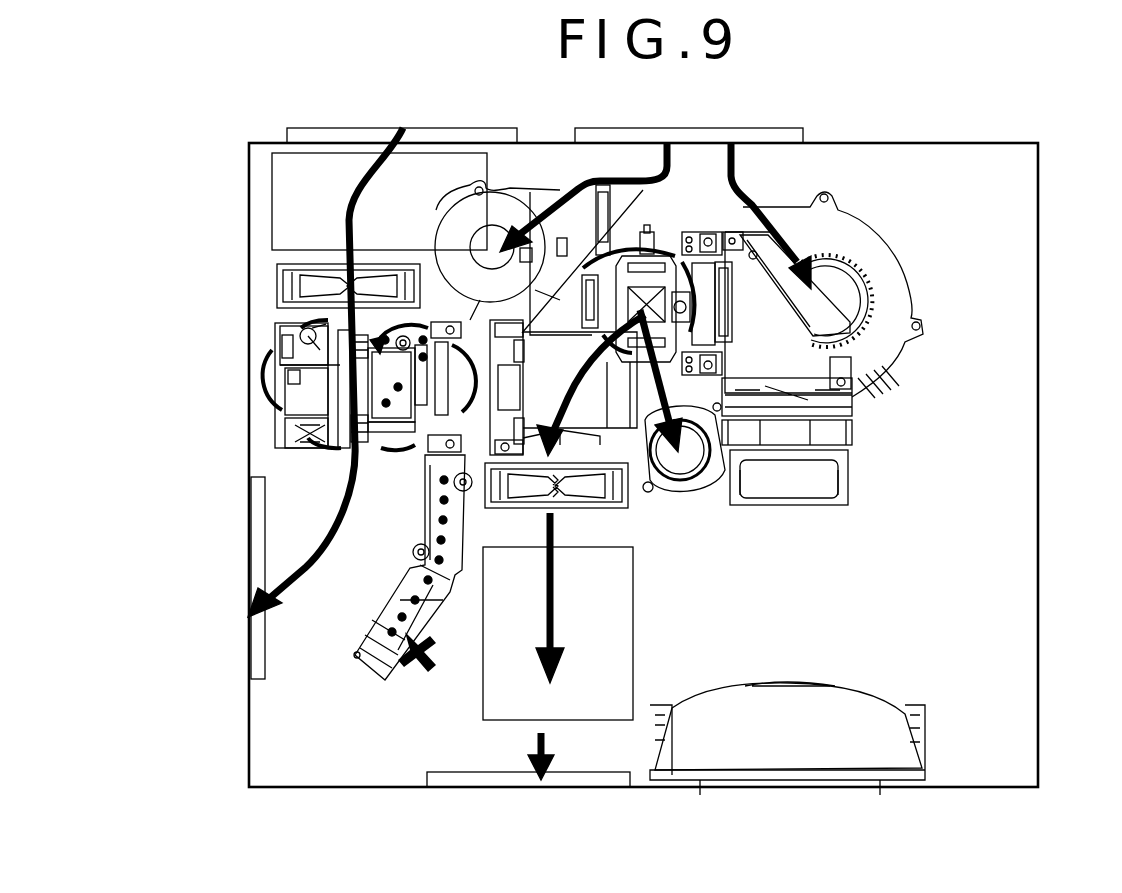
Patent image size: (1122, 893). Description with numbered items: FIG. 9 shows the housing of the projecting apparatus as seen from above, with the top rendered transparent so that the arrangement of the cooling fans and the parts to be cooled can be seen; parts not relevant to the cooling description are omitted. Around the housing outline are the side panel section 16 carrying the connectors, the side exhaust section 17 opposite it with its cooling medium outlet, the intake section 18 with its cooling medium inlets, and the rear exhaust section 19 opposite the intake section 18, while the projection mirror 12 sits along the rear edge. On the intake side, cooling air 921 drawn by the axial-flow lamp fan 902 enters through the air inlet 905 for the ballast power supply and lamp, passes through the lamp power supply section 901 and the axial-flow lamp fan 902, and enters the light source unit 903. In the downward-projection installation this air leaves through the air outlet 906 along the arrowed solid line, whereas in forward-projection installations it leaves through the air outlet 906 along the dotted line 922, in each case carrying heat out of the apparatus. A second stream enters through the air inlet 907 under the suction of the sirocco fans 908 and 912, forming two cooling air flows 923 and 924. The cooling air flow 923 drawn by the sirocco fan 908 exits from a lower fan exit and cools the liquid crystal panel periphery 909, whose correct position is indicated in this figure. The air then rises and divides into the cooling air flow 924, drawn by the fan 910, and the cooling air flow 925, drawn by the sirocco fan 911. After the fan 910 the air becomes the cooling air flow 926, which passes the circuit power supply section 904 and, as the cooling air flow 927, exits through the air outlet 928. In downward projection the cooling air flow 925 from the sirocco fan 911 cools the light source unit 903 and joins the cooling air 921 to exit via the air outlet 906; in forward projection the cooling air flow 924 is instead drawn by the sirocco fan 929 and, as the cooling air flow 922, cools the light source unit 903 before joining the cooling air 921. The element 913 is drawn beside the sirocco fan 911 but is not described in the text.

The projection mirror 12 is at (760, 743).
The side panel section 16 is at (1055, 450).
The side exhaust section 17 is at (228, 414).
The intake section 18 is at (546, 130).
The rear exhaust section 19 is at (552, 796).
The lamp power supply section 901 is at (272, 179).
The axial-flow lamp fan 902 is at (277, 282).
The light source unit 903 is at (277, 356).
The circuit power supply section 904 is at (604, 722).
The air inlet for ballast power supply and lamp 905 is at (340, 128).
The air outlet 906 is at (251, 645).
The air inlet 907 is at (702, 128).
The sirocco fan 908 is at (436, 217).
The liquid crystal panel periphery 909 is at (645, 327).
The fan 910 is at (498, 496).
The sirocco fan 911 is at (698, 478).
The sirocco fan 912 is at (877, 235).
The light source unit 913 is at (786, 500).
The cooling air 921 is at (432, 535).
The cooling air flow 922 is at (342, 549).
The cooling air flow 923 is at (657, 163).
The cooling air flow 924 is at (738, 184).
The cooling air flow 925 is at (664, 478).
The cooling air flow 926 is at (554, 599).
The cooling air flow 927 is at (538, 745).
The air outlet 928 is at (455, 787).
The sirocco fan 929 is at (419, 658).